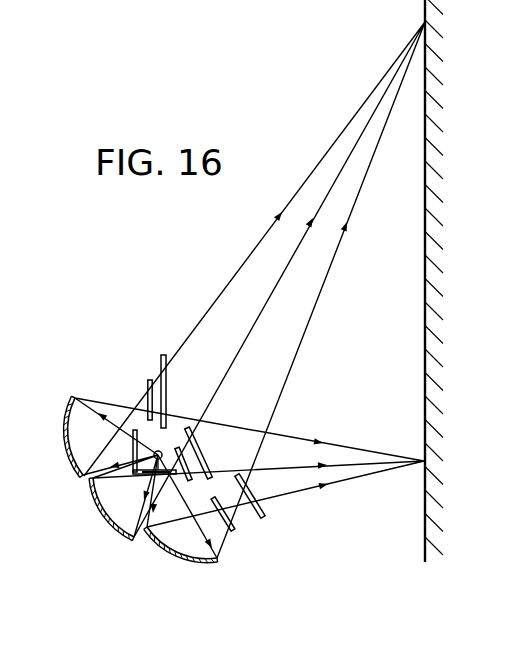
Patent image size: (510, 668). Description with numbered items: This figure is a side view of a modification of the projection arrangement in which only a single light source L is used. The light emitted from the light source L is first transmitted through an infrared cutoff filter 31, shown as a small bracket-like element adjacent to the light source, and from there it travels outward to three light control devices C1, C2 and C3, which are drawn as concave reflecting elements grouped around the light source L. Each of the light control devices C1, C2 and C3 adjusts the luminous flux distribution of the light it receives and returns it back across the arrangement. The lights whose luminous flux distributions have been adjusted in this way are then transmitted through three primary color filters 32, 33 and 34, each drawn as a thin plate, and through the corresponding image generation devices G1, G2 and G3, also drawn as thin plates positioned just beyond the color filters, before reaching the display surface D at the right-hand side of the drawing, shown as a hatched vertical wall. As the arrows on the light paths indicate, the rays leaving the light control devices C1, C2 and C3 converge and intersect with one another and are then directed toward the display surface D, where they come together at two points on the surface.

The display surface D is at (425, 258).
The light source L is at (161, 451).
The light control device C1 is at (65, 438).
The light control device C2 is at (97, 497).
The light control device C3 is at (197, 563).
The image generation device G1 is at (162, 356).
The image generation device G2 is at (196, 443).
The image generation device G3 is at (265, 517).
The infrared cutoff filter 31 is at (132, 445).
The primary color filter 32 is at (147, 382).
The primary color filter 33 is at (188, 484).
The primary color filter 34 is at (235, 532).